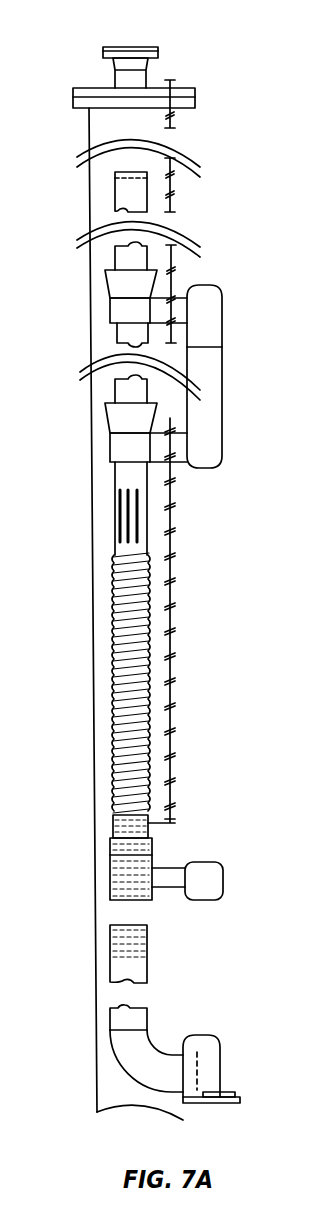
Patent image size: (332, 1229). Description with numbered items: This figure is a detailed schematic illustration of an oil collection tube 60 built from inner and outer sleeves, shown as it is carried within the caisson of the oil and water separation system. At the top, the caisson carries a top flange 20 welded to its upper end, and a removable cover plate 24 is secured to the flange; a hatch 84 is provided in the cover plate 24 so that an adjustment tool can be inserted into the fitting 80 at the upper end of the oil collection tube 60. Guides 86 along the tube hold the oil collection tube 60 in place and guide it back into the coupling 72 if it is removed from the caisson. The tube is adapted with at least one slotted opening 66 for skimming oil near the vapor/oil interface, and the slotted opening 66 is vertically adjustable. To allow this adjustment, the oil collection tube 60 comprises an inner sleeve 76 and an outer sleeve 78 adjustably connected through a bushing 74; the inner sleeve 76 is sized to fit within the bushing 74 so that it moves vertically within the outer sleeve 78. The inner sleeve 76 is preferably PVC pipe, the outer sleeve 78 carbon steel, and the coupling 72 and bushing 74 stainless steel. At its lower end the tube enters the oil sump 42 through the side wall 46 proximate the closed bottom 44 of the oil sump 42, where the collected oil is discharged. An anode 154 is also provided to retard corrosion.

The hatch 84 is at (132, 47).
The removable cover plate 24 is at (187, 88).
The top flange 20 is at (183, 110).
The fitting 80 is at (147, 187).
The guides 86 is at (105, 287).
The side wall 46 is at (212, 345).
The oil sump 42 is at (222, 430).
The oil collection tube 60 is at (147, 533).
The slotted opening 66 is at (117, 515).
The inner sleeve 76 is at (148, 703).
The bushing 74 is at (155, 817).
The coupling 72 is at (152, 847).
The outer sleeve 78 is at (150, 953).
The anode 154 is at (222, 1093).
The bottom 44 is at (222, 1103).